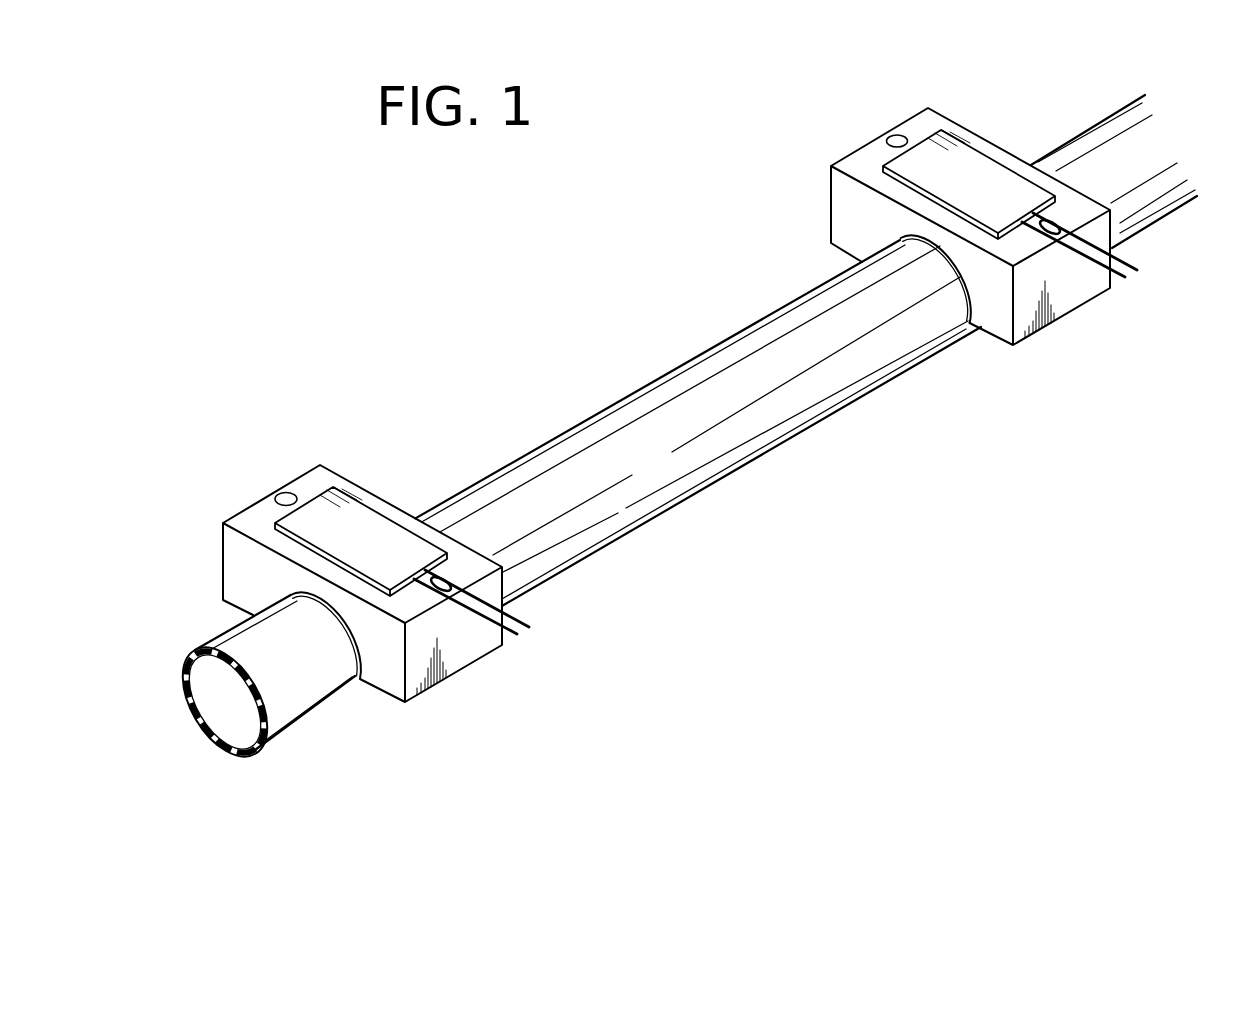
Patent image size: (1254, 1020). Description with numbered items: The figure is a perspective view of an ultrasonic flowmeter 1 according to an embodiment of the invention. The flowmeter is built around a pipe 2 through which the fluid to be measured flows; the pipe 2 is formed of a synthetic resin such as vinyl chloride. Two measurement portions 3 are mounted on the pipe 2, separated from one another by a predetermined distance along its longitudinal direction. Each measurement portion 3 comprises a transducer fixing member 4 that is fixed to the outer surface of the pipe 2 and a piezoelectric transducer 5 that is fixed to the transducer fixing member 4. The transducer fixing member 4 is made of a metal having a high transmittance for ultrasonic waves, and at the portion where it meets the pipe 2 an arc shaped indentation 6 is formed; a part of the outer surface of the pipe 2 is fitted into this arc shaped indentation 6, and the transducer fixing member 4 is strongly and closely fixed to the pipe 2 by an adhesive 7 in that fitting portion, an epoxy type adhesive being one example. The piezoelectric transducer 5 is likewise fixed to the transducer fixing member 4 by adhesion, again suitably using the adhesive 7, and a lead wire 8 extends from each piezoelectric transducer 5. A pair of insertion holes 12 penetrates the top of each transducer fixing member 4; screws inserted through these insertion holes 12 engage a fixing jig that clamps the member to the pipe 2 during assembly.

The ultrasonic flowmeter 1 is at (766, 130).
The pipe 2 is at (680, 387).
The measurement portion 3 is at (251, 486).
The transducer fixing member 4 is at (223, 540).
The piezoelectric transducer 5 is at (360, 503).
The arc shaped indentation 6 is at (352, 643).
The adhesive 7 is at (290, 594).
The lead wire 8 is at (491, 628).
The insertion hole 12 is at (286, 492).